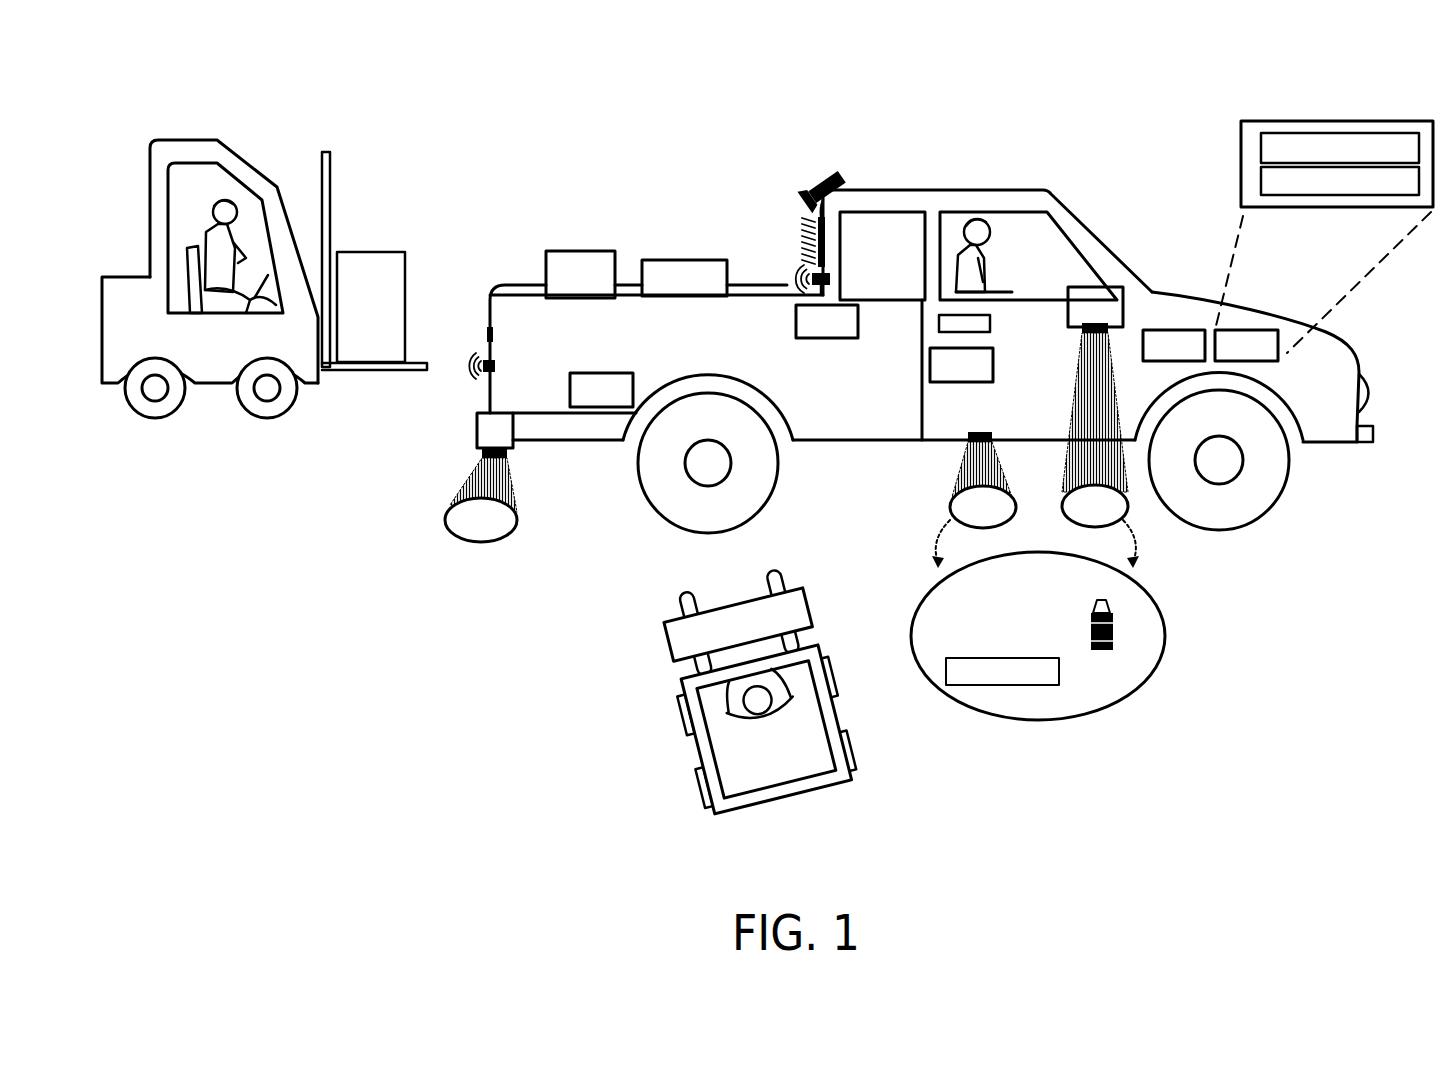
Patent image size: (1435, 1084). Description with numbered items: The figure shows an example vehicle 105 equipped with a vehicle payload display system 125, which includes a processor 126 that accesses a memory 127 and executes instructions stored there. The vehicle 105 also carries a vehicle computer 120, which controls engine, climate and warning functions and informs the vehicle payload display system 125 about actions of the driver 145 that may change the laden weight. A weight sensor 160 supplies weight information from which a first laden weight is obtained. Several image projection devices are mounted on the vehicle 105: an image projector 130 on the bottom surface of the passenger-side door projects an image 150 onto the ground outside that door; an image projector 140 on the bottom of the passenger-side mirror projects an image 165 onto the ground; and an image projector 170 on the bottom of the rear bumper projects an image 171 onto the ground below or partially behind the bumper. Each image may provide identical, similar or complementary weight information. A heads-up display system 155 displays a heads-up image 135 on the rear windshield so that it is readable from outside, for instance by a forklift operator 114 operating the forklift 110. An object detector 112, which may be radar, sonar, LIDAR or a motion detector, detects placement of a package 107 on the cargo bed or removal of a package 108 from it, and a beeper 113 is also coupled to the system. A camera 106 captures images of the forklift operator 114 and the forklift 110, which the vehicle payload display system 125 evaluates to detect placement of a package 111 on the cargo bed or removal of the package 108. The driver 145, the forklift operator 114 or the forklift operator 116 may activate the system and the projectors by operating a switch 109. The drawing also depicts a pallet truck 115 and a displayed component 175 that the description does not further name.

The vehicle 105 is at (1051, 122).
The camera 106 is at (836, 180).
The package 107 is at (567, 251).
The package 108 is at (671, 265).
The switch 109 is at (494, 333).
The forklift 110 is at (287, 120).
The package 111 is at (367, 252).
The object detector 112 is at (832, 279).
The beeper 113 is at (497, 366).
The forklift operator 114 is at (205, 322).
The pallet jack 115 is at (637, 739).
The forklift operator 116 is at (762, 716).
The vehicle computer 120 is at (1174, 345).
The vehicle payload display system 125 is at (1323, 286).
The processor 126 is at (1340, 148).
The memory 127 is at (1340, 181).
The image projector 130 is at (975, 432).
The heads-up image 135 is at (826, 262).
The image projector 140 is at (1082, 335).
The driver 145 is at (1006, 263).
The image 150 is at (983, 485).
The heads-up display (HUD) system 155 is at (827, 321).
The weight sensor 160 is at (601, 390).
The image 165 is at (1095, 430).
The image projector 170 is at (480, 453).
The image 171 is at (481, 500).
The door module 175 is at (961, 365).